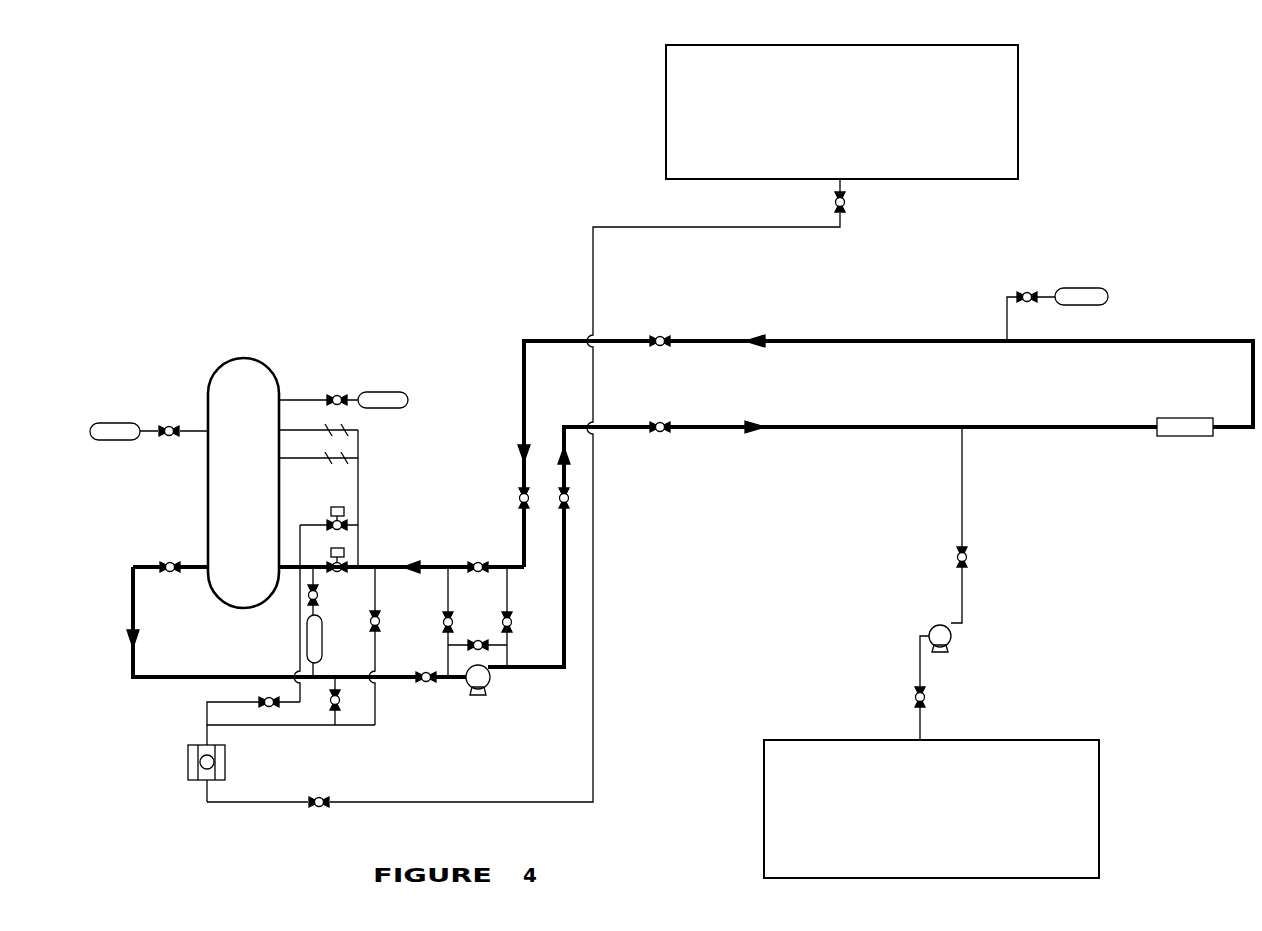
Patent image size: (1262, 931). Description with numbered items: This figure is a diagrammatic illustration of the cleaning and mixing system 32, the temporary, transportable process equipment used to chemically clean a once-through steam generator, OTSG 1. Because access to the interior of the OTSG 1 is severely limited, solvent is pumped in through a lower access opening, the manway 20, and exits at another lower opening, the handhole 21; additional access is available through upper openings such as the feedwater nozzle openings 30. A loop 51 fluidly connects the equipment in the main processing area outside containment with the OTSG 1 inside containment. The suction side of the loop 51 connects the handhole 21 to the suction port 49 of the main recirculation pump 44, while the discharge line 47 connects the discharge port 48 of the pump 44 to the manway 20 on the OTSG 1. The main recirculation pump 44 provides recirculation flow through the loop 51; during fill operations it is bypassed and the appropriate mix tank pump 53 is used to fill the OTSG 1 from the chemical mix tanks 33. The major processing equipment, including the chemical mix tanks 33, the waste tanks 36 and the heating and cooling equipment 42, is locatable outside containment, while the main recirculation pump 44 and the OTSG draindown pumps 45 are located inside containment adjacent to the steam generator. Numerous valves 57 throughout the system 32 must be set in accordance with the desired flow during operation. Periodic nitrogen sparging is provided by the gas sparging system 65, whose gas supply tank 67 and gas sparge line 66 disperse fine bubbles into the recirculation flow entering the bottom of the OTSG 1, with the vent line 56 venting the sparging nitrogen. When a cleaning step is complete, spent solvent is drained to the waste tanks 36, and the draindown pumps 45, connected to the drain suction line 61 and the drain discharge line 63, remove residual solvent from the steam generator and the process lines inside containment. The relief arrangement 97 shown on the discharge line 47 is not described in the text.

The OTSG 1 is at (265, 356).
The manway 20 is at (282, 568).
The handhole 21 is at (208, 563).
The feedwater nozzle openings 30 is at (280, 431).
The cleaning and mixing system 32 is at (467, 312).
The chemical mix tanks 33 is at (1067, 740).
The waste tanks 36 is at (666, 116).
The heating and cooling equipment 42 is at (1187, 436).
The main recirculation pump 44 is at (480, 696).
The OTSG draindown pumps 45 is at (188, 762).
The discharge line 47 is at (563, 339).
The discharge port 48 is at (488, 668).
The suction port 49 is at (465, 678).
The loop 51 is at (120, 593).
The mix tank pump 53 is at (948, 641).
The vent line 56 is at (297, 400).
The valves 57 is at (660, 336).
The drain suction line 61 is at (215, 702).
The drain discharge line 63 is at (480, 800).
The gas sparging system 65 is at (324, 640).
The gas sparge line 66 is at (316, 575).
The gas supply tank 67 is at (323, 658).
The relief line 97 is at (1007, 312).